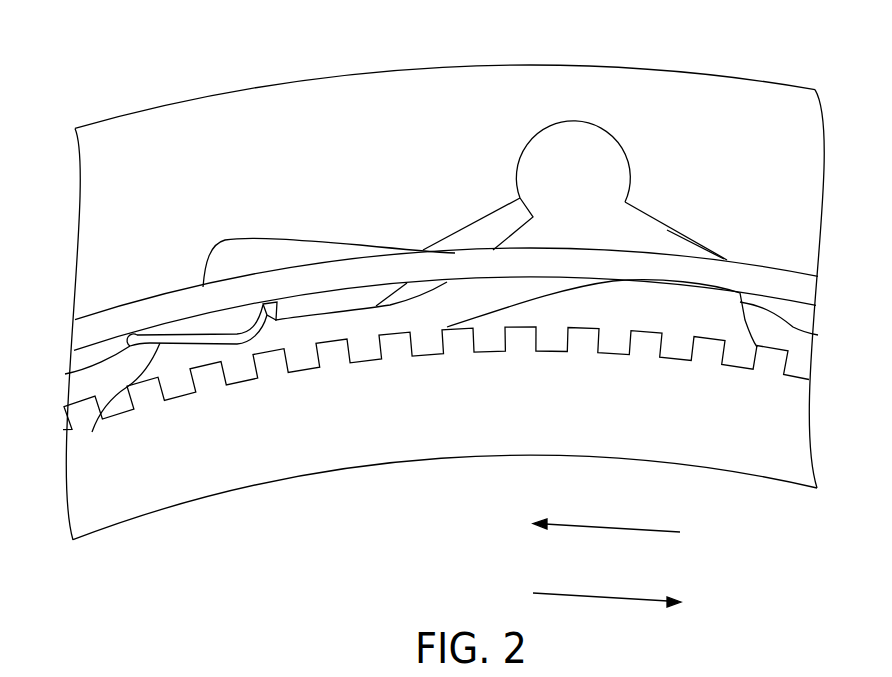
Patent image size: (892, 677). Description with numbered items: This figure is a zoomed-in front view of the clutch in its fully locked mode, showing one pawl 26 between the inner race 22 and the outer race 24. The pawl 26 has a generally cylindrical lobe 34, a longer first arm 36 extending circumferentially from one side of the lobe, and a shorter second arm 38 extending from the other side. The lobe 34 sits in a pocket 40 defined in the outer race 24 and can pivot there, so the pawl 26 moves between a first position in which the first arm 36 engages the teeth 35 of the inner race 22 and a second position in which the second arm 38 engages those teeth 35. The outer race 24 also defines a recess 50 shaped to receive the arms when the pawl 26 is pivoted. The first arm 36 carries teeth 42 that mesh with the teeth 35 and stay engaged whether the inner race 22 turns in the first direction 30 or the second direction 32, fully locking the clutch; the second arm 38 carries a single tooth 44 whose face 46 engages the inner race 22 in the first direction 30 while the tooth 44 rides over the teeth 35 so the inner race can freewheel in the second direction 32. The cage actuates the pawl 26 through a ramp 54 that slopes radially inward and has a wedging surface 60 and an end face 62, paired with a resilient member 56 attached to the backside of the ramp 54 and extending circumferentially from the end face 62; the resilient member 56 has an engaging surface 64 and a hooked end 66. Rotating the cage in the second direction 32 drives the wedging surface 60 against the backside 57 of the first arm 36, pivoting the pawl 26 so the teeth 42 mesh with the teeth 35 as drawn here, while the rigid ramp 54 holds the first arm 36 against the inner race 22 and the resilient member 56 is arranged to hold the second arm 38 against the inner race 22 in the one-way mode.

The inner race 22 is at (83, 503).
The outer race 24 is at (97, 212).
The pawl 26 is at (577, 137).
The first direction 30 is at (613, 525).
The second direction 32 is at (613, 595).
The lobe 34 is at (607, 170).
The teeth 35 is at (147, 400).
The first arm 36 is at (357, 340).
The second arm 38 is at (735, 298).
The pocket 40 is at (522, 124).
The teeth 42 is at (303, 362).
The single tooth 44 is at (757, 350).
The face 46 is at (818, 335).
The recess 50 is at (237, 240).
The ramp 54 is at (303, 313).
The backside 57 is at (376, 306).
The resilient member 56 is at (119, 408).
The wedging surface 60 is at (340, 318).
The end face 62 is at (258, 315).
The engaging surface 64 is at (200, 344).
The hooked end 66 is at (70, 372).